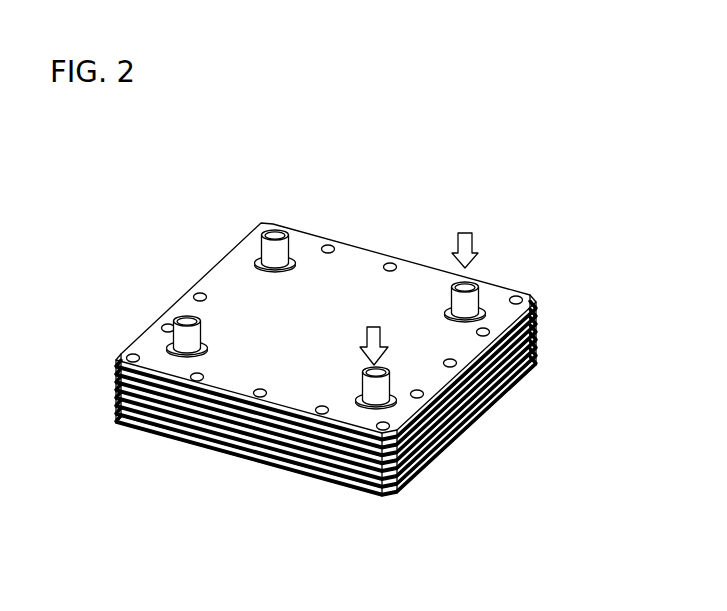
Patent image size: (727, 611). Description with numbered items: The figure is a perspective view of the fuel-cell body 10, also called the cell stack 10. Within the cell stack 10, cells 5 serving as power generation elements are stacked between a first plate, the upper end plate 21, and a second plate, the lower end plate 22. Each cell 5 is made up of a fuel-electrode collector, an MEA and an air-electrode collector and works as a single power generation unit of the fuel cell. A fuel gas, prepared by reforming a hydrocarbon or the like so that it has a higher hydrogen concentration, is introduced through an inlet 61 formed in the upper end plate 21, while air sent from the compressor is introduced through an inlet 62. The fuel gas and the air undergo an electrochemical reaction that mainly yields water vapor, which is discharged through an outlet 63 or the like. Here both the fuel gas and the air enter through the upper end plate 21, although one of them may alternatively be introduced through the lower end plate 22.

The fuel-cell body 10 is at (356, 188).
The cell 5 is at (537, 321).
The upper end plate 21 is at (124, 346).
The lower end plate 22 is at (138, 426).
The inlet 61 is at (468, 285).
The inlet 62 is at (376, 378).
The outlet 63 is at (263, 236).